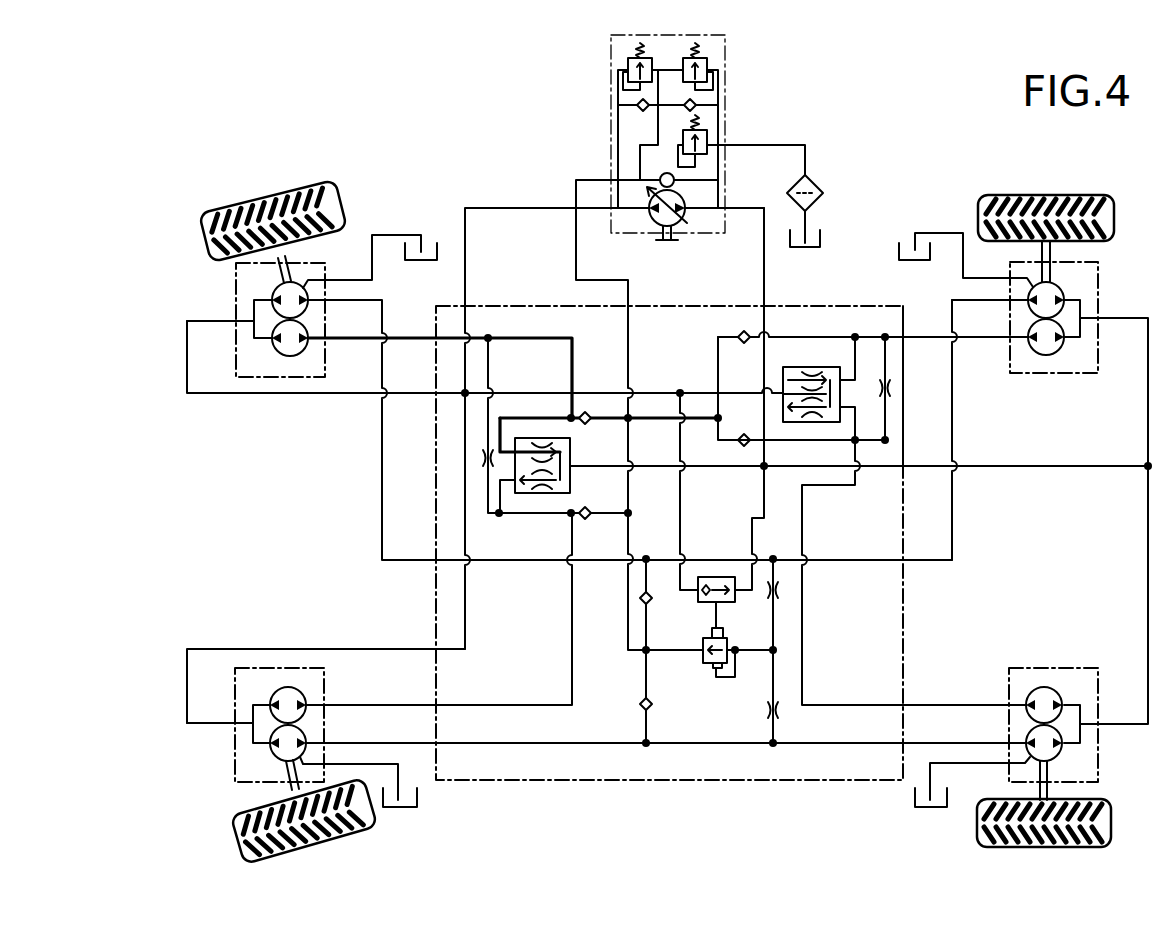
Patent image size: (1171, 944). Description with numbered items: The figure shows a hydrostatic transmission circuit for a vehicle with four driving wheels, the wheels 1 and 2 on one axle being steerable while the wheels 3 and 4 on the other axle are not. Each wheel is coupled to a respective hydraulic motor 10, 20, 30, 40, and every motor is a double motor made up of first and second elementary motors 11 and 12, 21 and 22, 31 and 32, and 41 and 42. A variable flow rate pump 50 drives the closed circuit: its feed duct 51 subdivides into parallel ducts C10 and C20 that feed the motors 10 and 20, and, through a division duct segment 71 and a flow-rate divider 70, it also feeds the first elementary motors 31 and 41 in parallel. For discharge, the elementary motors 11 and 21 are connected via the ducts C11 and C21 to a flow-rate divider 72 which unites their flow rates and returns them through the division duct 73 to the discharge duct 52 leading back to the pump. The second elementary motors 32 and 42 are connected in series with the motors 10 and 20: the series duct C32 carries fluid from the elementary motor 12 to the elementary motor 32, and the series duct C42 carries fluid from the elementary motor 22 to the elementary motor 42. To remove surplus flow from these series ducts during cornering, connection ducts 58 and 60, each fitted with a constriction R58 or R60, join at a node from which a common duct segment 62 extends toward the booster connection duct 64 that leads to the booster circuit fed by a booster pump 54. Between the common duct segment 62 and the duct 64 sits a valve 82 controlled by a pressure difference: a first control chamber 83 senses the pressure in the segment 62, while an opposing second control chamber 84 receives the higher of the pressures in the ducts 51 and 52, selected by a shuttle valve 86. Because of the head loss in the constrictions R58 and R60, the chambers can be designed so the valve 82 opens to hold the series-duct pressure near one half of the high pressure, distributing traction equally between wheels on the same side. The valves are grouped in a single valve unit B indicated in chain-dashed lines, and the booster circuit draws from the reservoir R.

The steerable driving wheel 1 is at (268, 193).
The steerable driving wheel 2 is at (320, 836).
The non-steerable driving wheel 3 is at (1046, 196).
The non-steerable driving wheel 4 is at (1112, 826).
The hydraulic motor 10 is at (236, 311).
The first elementary motor 11 is at (290, 344).
The second elementary motor 12 is at (298, 292).
The hydraulic motor 20 is at (235, 750).
The first elementary motor 21 is at (290, 686).
The second elementary motor 22 is at (282, 756).
The hydraulic motor 30 is at (1098, 278).
The first elementary motor 31 is at (1046, 348).
The second elementary motor 32 is at (1040, 302).
The hydraulic motor 40 is at (1012, 668).
The first elementary motor 41 is at (1046, 688).
The second elementary motor 42 is at (1052, 754).
The variable flow rate pump 50 is at (672, 228).
The feed duct 51 is at (498, 209).
The discharge duct 52 is at (766, 278).
The booster pump 54 is at (674, 181).
The connection duct 58 is at (775, 618).
The connection duct 60 is at (775, 685).
The common duct segment 62 is at (744, 653).
The booster connection duct 64 is at (630, 332).
The flow-rate divider 70 is at (809, 367).
The division duct segment 71 is at (680, 393).
The flow-rate divider 72 is at (570, 475).
The division duct 73 is at (657, 467).
The valve 82 is at (703, 655).
The first control chamber 83 is at (716, 670).
The second control chamber 84 is at (712, 632).
The shuttle valve 86 is at (716, 577).
The parallel duct C10 is at (353, 396).
The discharge duct C11 is at (416, 337).
The parallel duct C20 is at (397, 650).
The discharge duct C21 is at (384, 705).
The series duct C32 is at (952, 518).
The series duct C42 is at (617, 745).
The constriction R58 is at (786, 595).
The constriction R60 is at (780, 712).
The reservoir with filter R is at (820, 242).
The valve unit B is at (590, 782).